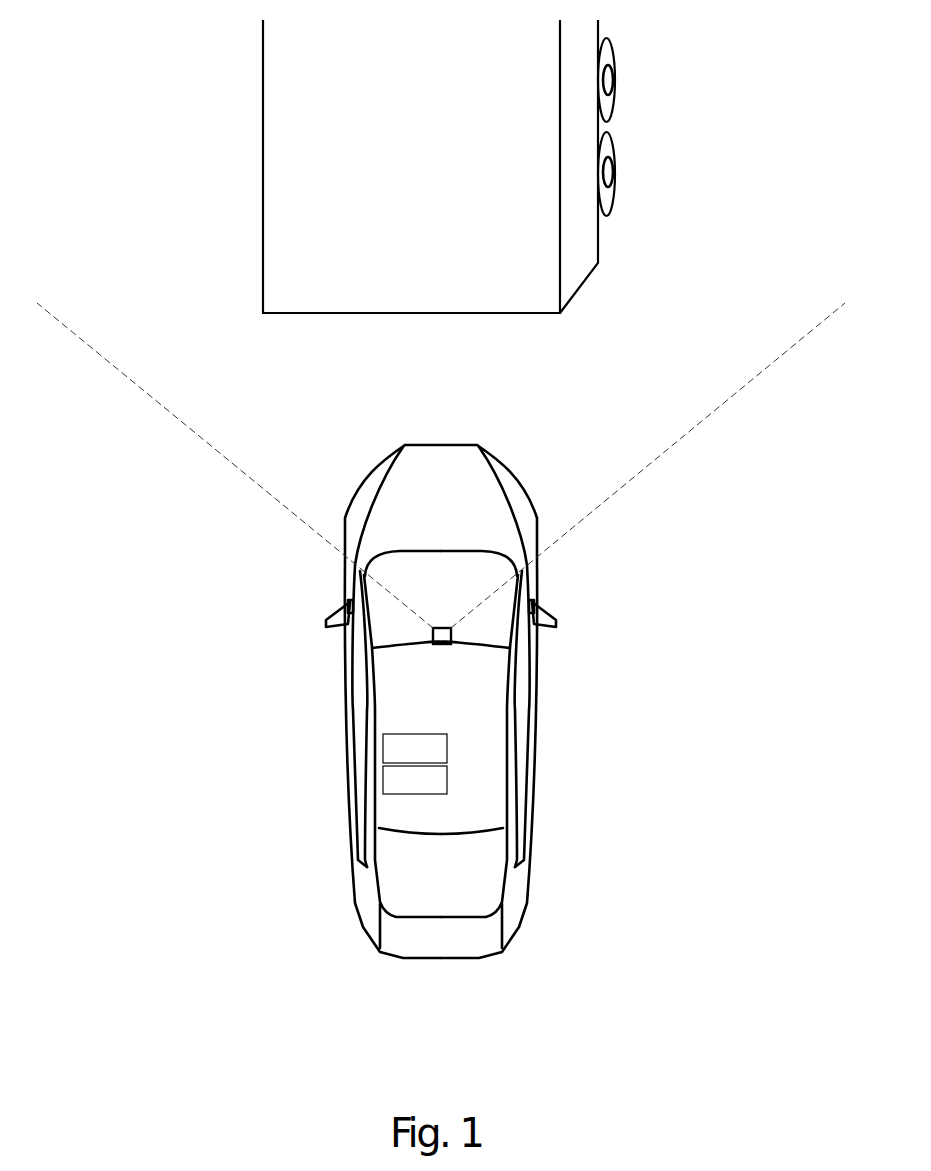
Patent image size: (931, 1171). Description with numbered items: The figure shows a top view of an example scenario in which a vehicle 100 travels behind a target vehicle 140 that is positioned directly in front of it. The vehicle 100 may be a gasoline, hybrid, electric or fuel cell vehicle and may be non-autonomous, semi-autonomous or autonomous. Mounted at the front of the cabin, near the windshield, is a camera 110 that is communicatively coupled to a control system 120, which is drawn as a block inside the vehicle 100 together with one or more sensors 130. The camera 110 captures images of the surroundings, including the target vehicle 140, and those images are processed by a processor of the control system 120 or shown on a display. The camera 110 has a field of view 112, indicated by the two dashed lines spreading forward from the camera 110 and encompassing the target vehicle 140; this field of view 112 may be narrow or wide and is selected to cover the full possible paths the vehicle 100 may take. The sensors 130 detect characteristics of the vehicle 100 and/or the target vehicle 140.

The vehicle 100 is at (218, 561).
The camera 110 is at (452, 632).
The field of view 112 is at (628, 480).
The control system 120 is at (415, 748).
The sensors 130 is at (415, 780).
The target vehicle 140 is at (575, 133).